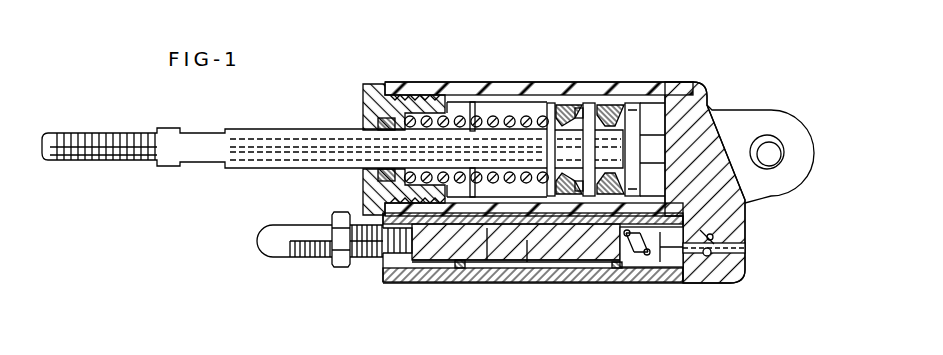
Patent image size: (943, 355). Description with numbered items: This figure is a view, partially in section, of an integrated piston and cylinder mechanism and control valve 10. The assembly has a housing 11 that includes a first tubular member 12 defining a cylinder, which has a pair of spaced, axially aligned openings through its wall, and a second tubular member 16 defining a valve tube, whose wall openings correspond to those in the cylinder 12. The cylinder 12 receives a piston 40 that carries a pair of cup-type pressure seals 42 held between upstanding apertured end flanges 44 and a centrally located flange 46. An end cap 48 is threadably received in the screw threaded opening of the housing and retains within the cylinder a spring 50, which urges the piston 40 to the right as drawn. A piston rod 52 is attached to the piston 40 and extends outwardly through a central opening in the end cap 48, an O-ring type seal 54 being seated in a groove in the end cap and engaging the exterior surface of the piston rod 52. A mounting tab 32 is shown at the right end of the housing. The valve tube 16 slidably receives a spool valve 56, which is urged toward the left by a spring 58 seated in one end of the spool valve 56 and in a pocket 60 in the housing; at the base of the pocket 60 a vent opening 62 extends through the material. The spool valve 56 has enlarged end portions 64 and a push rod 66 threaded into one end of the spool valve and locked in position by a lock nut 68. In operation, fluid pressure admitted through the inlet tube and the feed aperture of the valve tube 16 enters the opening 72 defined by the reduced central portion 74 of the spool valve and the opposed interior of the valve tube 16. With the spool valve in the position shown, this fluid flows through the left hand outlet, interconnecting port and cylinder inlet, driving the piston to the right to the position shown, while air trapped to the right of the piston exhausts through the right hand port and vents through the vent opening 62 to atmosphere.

The integrated piston and cylinder mechanism and control valve 10 is at (406, 57).
The housing 11 is at (665, 90).
The first tubular member 12 is at (493, 88).
The second tubular member 16 is at (552, 282).
The mounting tab 32 is at (770, 120).
The piston 40 is at (618, 147).
The cup-type pressure seals 42 is at (556, 103).
The upstanding apertured end flanges 44 is at (560, 103).
The centrally located flange 46 is at (590, 105).
The end cap 48 is at (368, 92).
The spring 50 is at (456, 103).
The piston rod 52 is at (246, 136).
The O-ring type seal 54 is at (376, 122).
The spool valve 56 is at (507, 252).
The spring 58 is at (643, 252).
The pocket 60 is at (700, 265).
The vent opening 62 is at (747, 246).
The enlarged end portions 64 is at (463, 260).
The push rod 66 is at (266, 241).
The lock nut 68 is at (343, 265).
The opening 72 is at (527, 262).
The reduced central portion 74 is at (487, 252).